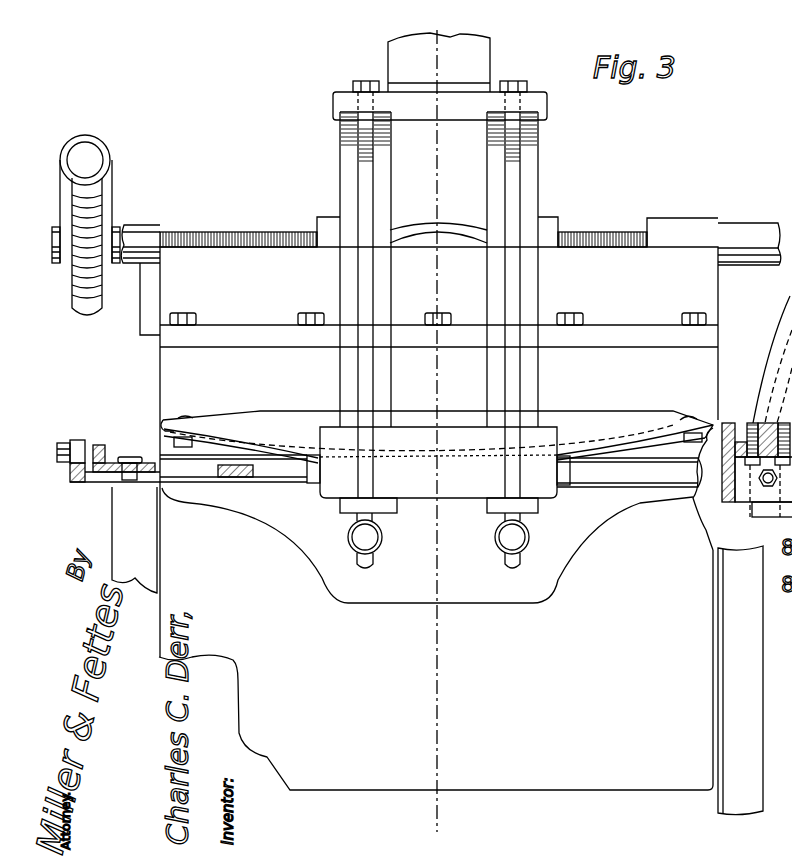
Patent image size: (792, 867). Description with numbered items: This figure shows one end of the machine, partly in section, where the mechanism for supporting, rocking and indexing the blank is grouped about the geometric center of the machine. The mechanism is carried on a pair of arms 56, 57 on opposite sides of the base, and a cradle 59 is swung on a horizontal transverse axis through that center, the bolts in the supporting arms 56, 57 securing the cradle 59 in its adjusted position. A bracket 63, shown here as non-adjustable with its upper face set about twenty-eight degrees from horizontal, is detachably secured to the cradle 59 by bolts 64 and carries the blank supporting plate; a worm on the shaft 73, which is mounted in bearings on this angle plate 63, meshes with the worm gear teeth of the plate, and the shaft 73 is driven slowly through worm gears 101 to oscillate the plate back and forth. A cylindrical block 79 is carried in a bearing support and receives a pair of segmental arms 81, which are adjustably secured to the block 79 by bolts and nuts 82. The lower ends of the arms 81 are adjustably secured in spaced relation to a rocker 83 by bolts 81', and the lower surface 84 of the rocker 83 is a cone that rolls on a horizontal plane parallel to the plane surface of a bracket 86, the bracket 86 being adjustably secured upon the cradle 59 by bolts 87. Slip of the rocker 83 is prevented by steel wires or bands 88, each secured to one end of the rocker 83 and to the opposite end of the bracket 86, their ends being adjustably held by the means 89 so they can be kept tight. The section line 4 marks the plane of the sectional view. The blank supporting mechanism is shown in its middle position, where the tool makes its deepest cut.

The section line 4- 4 is at (447, 431).
The arm 56 is at (165, 583).
The arm 57 is at (750, 658).
The cradle 59 is at (542, 767).
The bracket 63 is at (588, 262).
The bolts 64 is at (190, 320).
The shaft 73 is at (252, 240).
The cylindrical block 79 is at (467, 195).
The segmental arms 81 is at (463, 295).
The bolts 81' is at (301, 493).
The bolts and nuts 82 is at (514, 85).
The rocker 83 is at (577, 422).
The lower surface 84 is at (617, 445).
The bracket 86 is at (267, 472).
The bolts 87 is at (445, 497).
The steel wires or bands 88 is at (650, 440).
The adjustable holding means 89 is at (62, 470).
The worm gears 101 is at (107, 157).